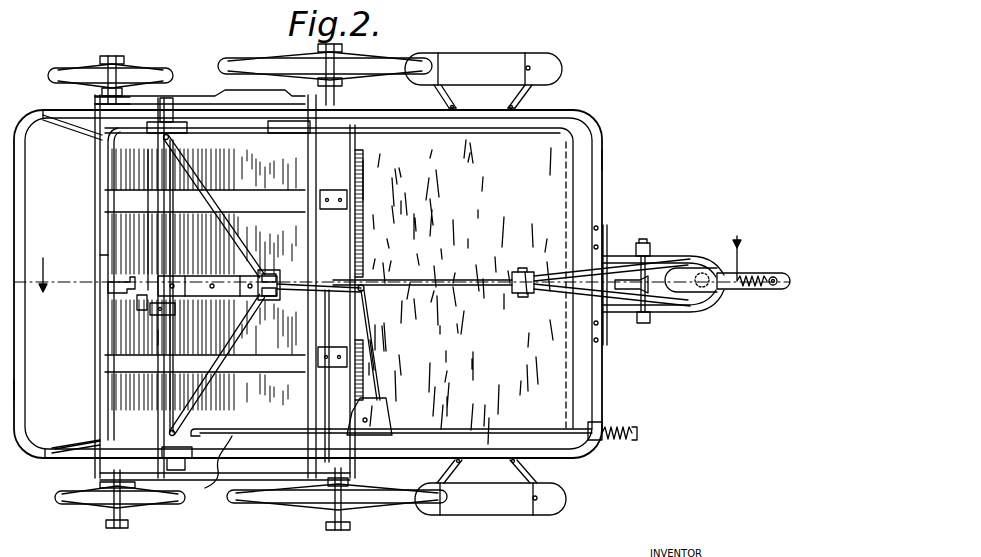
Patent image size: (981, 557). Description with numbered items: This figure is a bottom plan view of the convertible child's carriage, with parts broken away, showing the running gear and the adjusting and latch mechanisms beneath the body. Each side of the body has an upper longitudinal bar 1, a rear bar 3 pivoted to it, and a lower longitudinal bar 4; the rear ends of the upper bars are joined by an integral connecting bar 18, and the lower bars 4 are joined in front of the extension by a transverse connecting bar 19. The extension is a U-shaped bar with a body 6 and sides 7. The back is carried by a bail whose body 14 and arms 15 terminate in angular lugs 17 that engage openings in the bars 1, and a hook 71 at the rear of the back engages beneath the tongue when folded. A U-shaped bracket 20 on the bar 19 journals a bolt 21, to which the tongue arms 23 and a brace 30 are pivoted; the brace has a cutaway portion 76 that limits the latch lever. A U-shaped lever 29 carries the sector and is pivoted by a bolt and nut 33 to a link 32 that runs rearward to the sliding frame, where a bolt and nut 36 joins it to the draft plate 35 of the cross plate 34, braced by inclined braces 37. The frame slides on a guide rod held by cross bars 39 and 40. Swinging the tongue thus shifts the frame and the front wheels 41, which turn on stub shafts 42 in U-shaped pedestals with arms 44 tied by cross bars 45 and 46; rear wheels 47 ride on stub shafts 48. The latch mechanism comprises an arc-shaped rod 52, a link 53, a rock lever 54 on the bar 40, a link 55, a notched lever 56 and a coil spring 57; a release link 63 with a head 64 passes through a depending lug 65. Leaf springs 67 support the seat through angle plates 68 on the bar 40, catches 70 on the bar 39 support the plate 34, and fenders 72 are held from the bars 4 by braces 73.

The upper longitudinal bar 1 is at (72, 470).
The rear bar 3 is at (402, 263).
The lower longitudinal bar 4 is at (485, 100).
The body of U-shaped extension bar 6 is at (570, 210).
The sides of U-shaped extension bar 7 is at (540, 130).
The bail body 14 is at (122, 134).
The bail arms 15 is at (75, 130).
The angular lug 17 is at (46, 112).
The connecting bar 18 is at (25, 383).
The connecting bar 19 is at (603, 158).
The U-shaped bracket 20 is at (618, 252).
The bolt 21 is at (648, 318).
The tongue arms 23 is at (660, 252).
The U-shaped lever 29 is at (557, 297).
The brace 30 is at (153, 313).
The link 32 is at (463, 285).
The bolt and nut 33 is at (520, 268).
The cross plate 34 is at (167, 335).
The draft plate 35 is at (197, 288).
The bolt and nut 36 is at (267, 270).
The inclined braces 37 is at (217, 190).
The cross bar 39 is at (143, 180).
The cross bar 40 is at (370, 330).
The front wheels 41 is at (245, 505).
The stub shaft 42 is at (338, 530).
The pedestal arm 44 is at (188, 97).
The cross bar 45 is at (315, 402).
The cross bar 46 is at (98, 260).
The rear wheels 47 is at (222, 68).
The stub shafts 48 is at (120, 58).
The arc-shaped rod 52 is at (218, 480).
The link 53 is at (247, 432).
The rock lever 54 is at (384, 412).
The link 55 is at (376, 367).
The lever 56 is at (288, 290).
The coil spring 57 is at (363, 202).
The link 63 is at (518, 428).
The head 64 is at (638, 427).
The depending lug 65 is at (600, 425).
The leaf springs 67 is at (250, 383).
The angle plates 68 is at (335, 185).
The catches 70 is at (188, 126).
The hook 71 is at (128, 295).
The fenders 72 is at (500, 518).
The braces 73 is at (440, 95).
The cutaway portion 76 is at (673, 260).